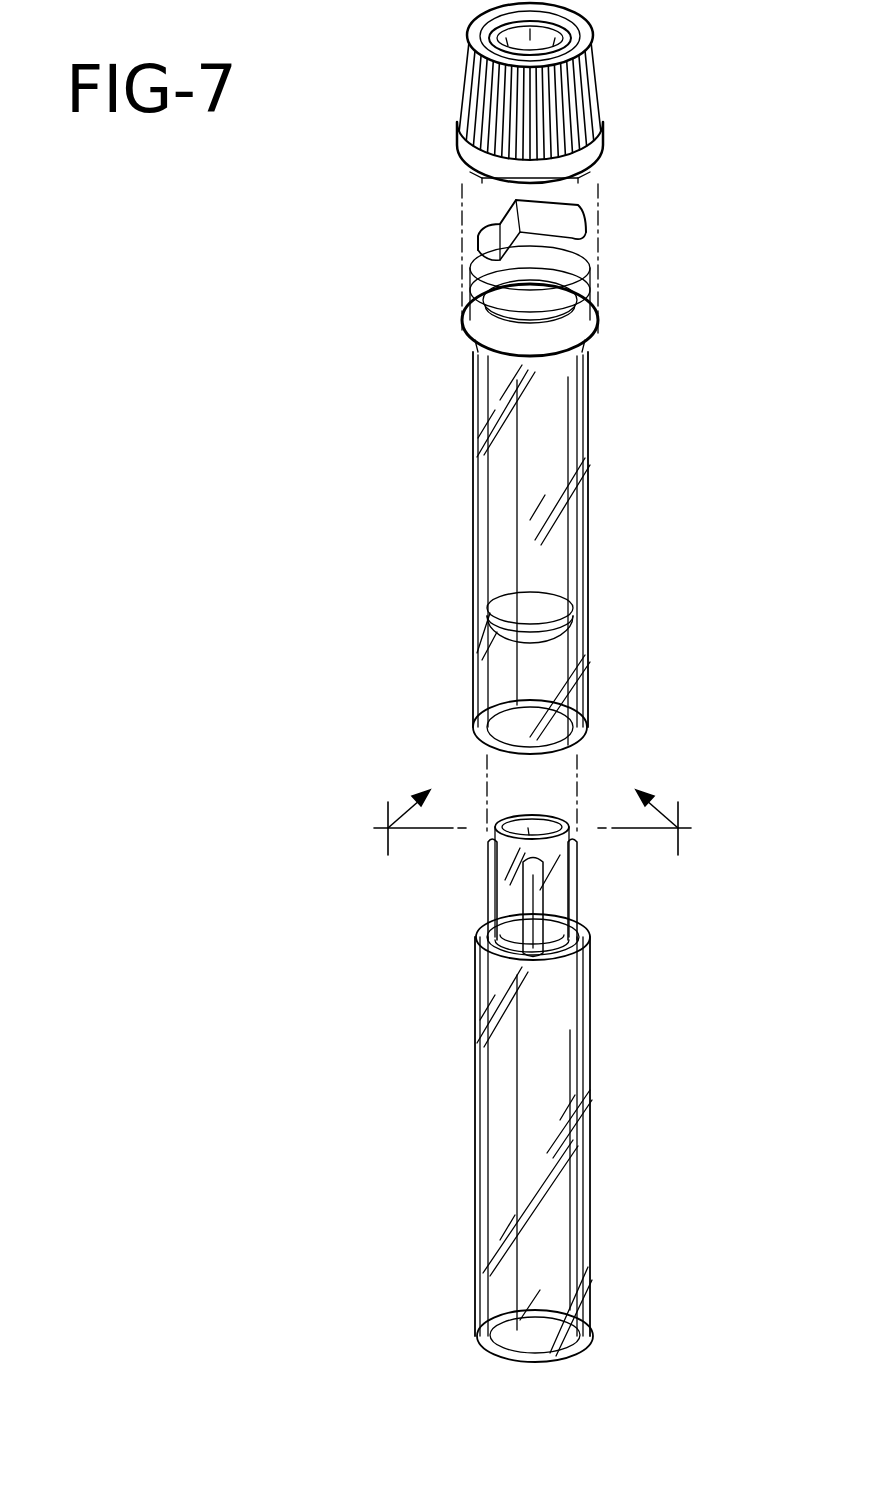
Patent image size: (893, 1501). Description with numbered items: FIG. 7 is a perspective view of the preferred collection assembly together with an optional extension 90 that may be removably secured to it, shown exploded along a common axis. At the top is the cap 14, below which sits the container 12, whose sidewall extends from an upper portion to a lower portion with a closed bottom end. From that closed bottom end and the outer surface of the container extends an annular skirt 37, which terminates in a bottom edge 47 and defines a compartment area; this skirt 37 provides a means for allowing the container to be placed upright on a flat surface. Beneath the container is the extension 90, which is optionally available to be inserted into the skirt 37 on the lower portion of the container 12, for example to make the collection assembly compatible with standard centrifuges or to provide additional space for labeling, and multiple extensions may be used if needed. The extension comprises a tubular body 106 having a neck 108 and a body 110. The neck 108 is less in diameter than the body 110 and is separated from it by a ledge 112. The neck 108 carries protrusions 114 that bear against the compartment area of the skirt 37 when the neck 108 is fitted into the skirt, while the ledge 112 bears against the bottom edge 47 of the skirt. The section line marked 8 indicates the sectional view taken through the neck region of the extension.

The cap 14 is at (600, 85).
The container 12 is at (583, 484).
The annular skirt 37 is at (590, 662).
The bottom edge 47 is at (528, 757).
The section line 8- 8 is at (534, 822).
The extension 90 is at (578, 1063).
The tubular body 106 is at (527, 1262).
The neck 108 is at (512, 892).
The body 110 is at (553, 1147).
The ledge 112 is at (592, 924).
The protrusions 114 is at (577, 882).